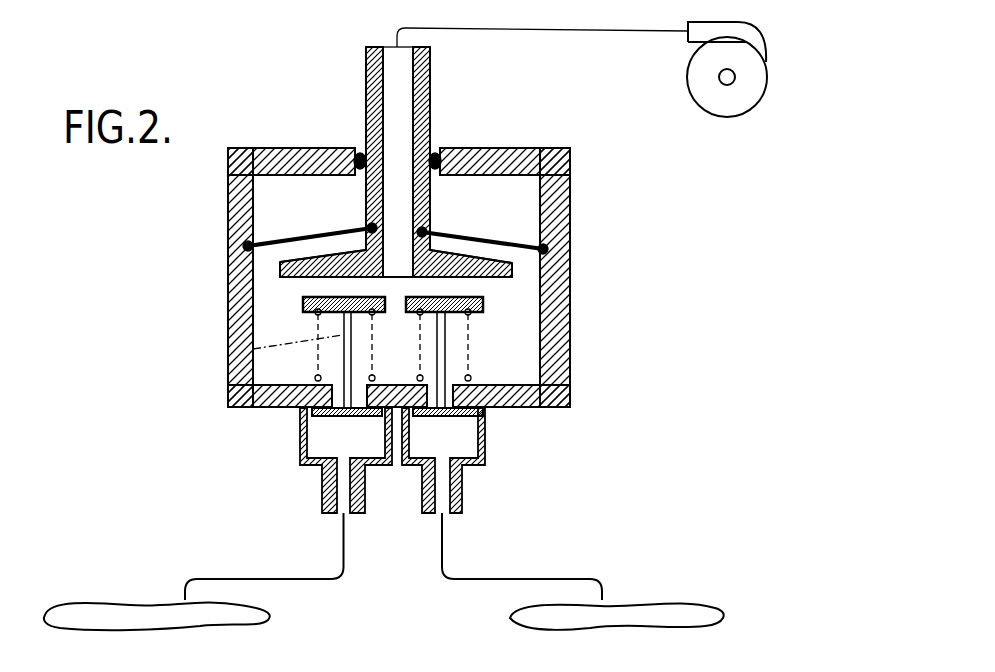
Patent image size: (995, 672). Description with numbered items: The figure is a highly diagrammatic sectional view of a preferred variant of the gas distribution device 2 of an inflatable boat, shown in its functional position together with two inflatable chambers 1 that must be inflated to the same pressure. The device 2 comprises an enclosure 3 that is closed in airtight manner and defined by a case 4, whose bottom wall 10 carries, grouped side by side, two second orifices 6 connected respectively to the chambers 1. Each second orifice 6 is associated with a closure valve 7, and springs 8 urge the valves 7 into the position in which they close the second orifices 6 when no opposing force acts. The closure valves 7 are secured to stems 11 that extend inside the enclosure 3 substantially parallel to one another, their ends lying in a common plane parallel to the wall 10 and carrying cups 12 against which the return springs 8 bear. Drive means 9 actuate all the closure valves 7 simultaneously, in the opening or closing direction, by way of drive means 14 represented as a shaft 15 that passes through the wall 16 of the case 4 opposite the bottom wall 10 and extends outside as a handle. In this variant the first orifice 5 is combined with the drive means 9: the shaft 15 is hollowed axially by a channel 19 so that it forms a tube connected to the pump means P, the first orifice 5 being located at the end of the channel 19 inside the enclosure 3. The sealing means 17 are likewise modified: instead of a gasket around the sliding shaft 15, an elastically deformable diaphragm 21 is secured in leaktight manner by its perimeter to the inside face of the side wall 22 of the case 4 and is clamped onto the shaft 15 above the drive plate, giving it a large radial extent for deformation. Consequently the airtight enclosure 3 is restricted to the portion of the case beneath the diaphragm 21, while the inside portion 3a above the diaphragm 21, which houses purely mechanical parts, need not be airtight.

The inflatable chamber 1 is at (125, 605).
The device for distributing gas under pressure 2 is at (407, 253).
The enclosure 3 is at (502, 347).
The inside portion of the case above the diaphragm 3a is at (285, 207).
The case 4 is at (242, 200).
The first orifice 5 is at (396, 275).
The second orifices 6 is at (300, 408).
The closure valves 7 is at (477, 418).
The springs 8 is at (225, 348).
The drive means 9 is at (453, 220).
The wall 10 is at (248, 395).
The stems 11 is at (345, 328).
The cups 12 is at (323, 297).
The drive means 14 is at (434, 61).
The shaft 15 is at (367, 61).
The wall 16 is at (497, 160).
The sealing means 17 is at (313, 230).
The channel 19 is at (393, 120).
The diaphragm 21 is at (247, 247).
The side wall 22 is at (245, 273).
The pump means P is at (738, 105).